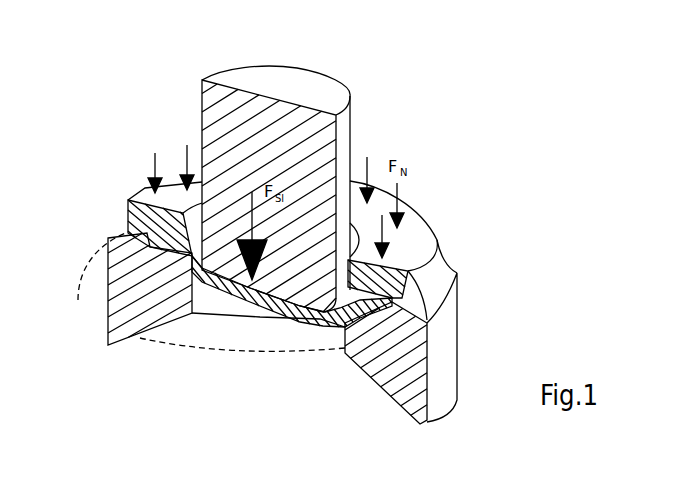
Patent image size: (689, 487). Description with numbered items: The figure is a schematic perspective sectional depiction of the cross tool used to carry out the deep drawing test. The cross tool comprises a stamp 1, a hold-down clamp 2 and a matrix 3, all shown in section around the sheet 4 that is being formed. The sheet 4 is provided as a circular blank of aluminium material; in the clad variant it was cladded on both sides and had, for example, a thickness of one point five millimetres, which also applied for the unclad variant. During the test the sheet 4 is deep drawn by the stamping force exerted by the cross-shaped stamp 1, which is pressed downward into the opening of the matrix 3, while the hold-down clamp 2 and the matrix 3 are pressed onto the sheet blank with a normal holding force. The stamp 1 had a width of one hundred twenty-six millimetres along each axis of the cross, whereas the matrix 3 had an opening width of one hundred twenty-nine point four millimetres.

The stamp 1 is at (298, 82).
The hold-down clamp 2 is at (417, 228).
The matrix 3 is at (123, 298).
The sheet 4 is at (255, 310).